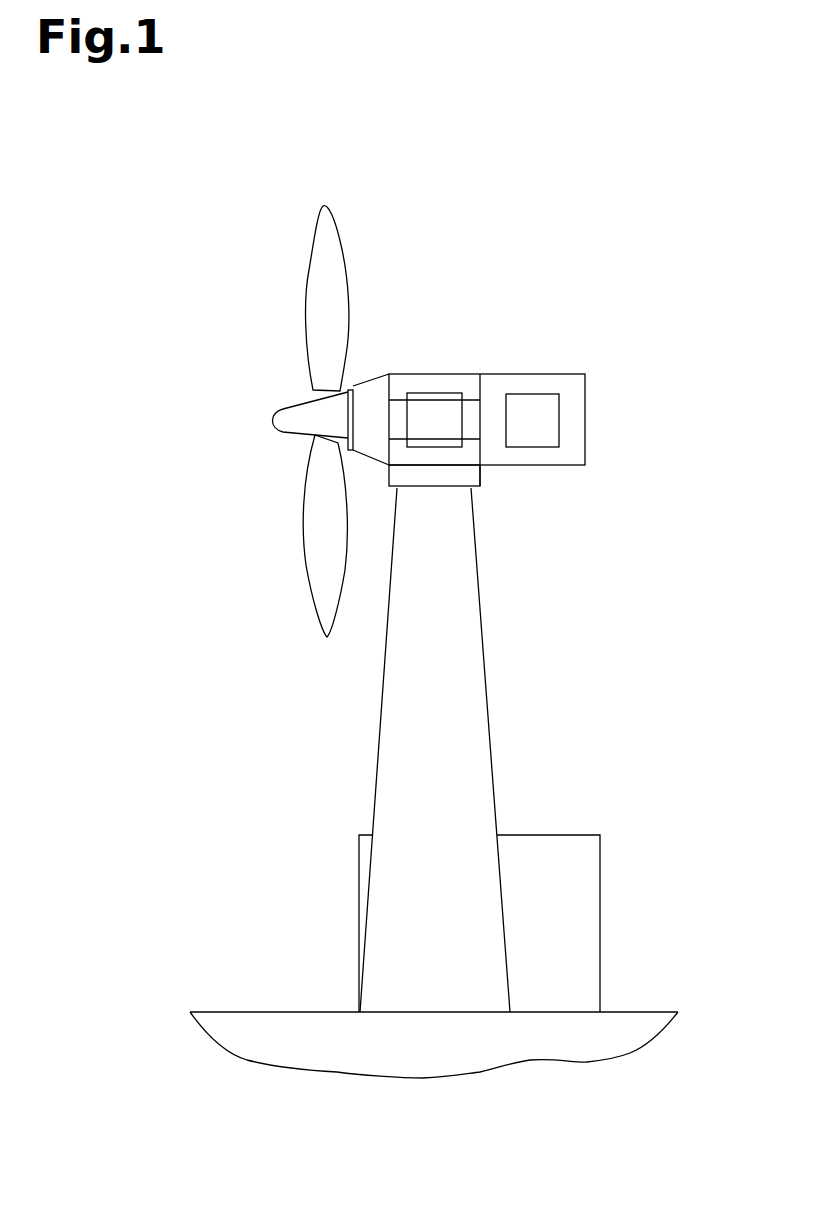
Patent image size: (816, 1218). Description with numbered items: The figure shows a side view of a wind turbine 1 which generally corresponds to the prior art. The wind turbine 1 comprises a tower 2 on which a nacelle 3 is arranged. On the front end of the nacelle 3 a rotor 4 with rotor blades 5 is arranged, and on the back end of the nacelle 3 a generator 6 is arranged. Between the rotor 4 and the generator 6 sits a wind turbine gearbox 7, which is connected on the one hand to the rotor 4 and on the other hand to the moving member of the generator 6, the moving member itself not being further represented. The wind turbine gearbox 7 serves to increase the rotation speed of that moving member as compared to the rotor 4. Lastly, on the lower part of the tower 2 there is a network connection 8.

The wind turbine 1 is at (600, 275).
The tower 2 is at (507, 697).
The nacelle 3 is at (503, 372).
The rotor 4 is at (278, 405).
The rotor blades 5 is at (278, 537).
The generator 6 is at (547, 419).
The wind turbine gearbox 7 is at (425, 413).
The network connection 8 is at (587, 827).